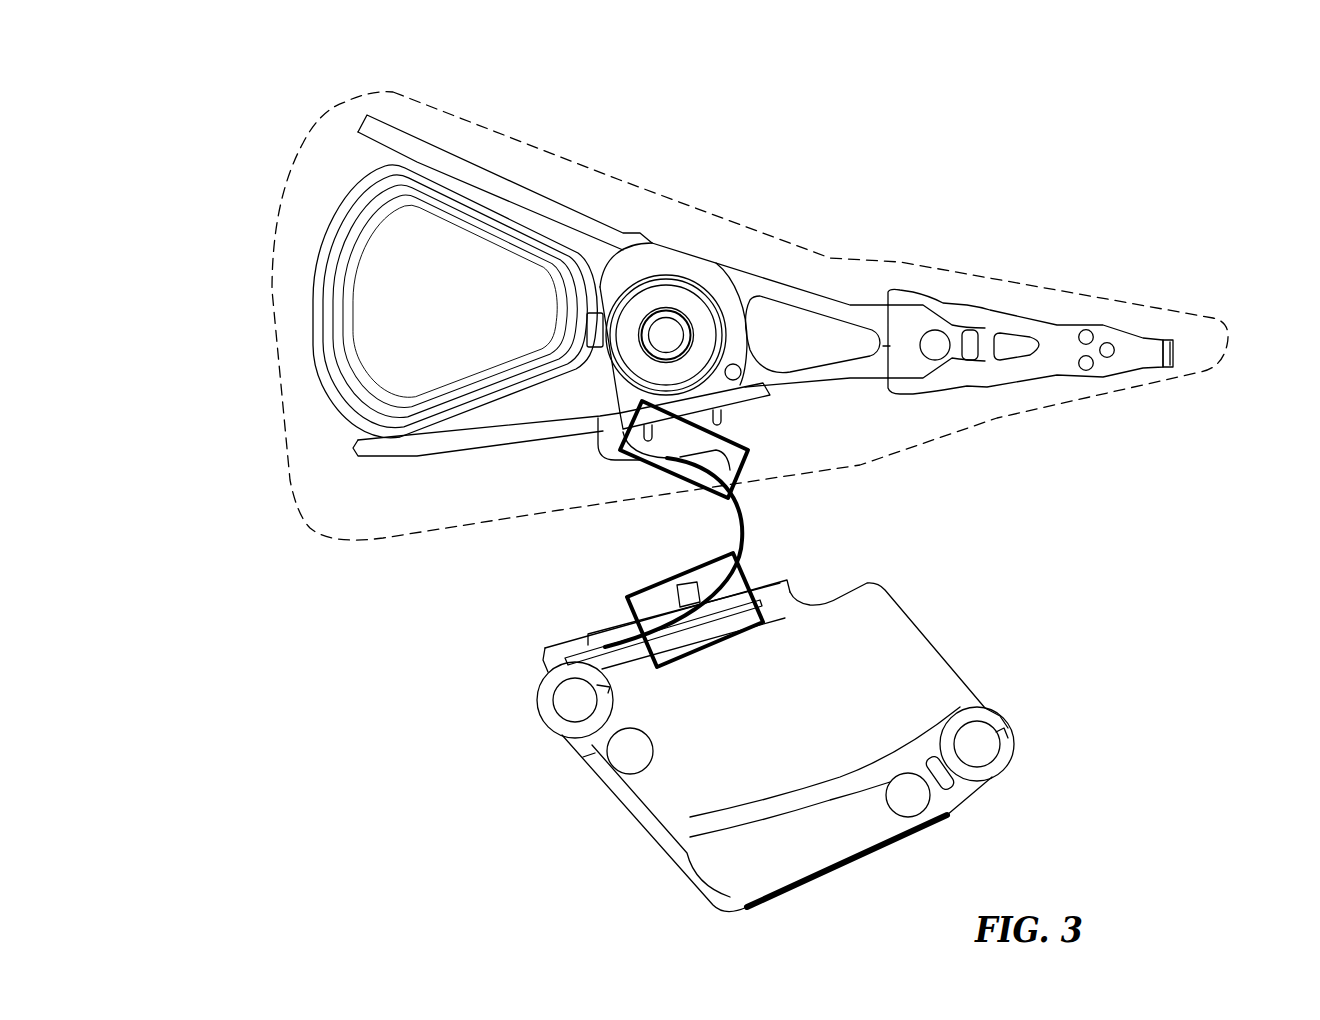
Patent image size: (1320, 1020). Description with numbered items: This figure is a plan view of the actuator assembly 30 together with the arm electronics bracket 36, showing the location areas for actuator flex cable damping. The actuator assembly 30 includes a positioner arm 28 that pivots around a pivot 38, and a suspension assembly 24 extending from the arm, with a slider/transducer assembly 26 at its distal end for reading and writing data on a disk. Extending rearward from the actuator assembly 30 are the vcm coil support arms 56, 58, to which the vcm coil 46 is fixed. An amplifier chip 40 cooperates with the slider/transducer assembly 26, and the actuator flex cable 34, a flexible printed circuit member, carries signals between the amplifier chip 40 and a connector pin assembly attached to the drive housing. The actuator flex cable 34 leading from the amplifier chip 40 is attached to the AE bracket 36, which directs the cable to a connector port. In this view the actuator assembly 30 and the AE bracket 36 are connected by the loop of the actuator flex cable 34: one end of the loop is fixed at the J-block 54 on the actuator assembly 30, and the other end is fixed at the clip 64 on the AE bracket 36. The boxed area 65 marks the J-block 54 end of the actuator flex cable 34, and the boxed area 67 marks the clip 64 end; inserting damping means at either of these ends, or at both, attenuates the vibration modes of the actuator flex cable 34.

The suspension assembly 24 is at (1000, 323).
The slider/transducer assembly 26 is at (1174, 355).
The positioner arm 28 is at (780, 293).
The actuator assembly 30 is at (383, 540).
The actuator flex cable 34 is at (735, 520).
The arm electronics (AE) bracket 36 is at (626, 816).
The pivot 38 is at (668, 297).
The amplifier chip 40 is at (667, 430).
The vcm coil 46 is at (316, 300).
The J-block 54 is at (602, 467).
The vcm coil support arm 56 is at (357, 445).
The vcm coil support arm 58 is at (378, 123).
The clip 64 is at (607, 627).
The boxed area 65 is at (742, 463).
The boxed area 67 is at (748, 571).